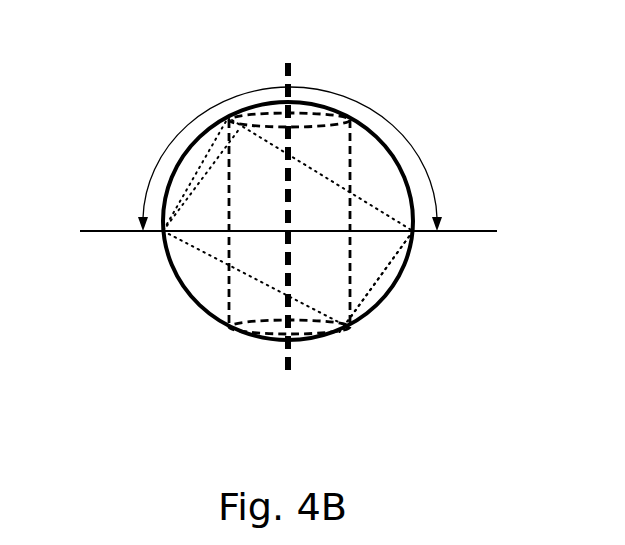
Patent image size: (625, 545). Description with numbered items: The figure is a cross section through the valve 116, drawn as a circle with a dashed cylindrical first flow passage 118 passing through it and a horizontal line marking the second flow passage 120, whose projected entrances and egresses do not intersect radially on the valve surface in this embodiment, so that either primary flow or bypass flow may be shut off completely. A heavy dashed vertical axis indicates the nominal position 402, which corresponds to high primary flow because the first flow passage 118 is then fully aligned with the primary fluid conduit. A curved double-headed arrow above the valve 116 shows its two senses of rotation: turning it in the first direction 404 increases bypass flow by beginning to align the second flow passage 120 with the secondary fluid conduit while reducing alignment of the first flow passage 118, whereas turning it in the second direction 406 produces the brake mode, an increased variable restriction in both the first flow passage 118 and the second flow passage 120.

The valve 116 is at (383, 300).
The first flow passage 118 is at (227, 296).
The second flow passage 120 is at (190, 238).
The nominal position 402 is at (286, 365).
The first direction 404 is at (163, 153).
The second direction 406 is at (424, 167).